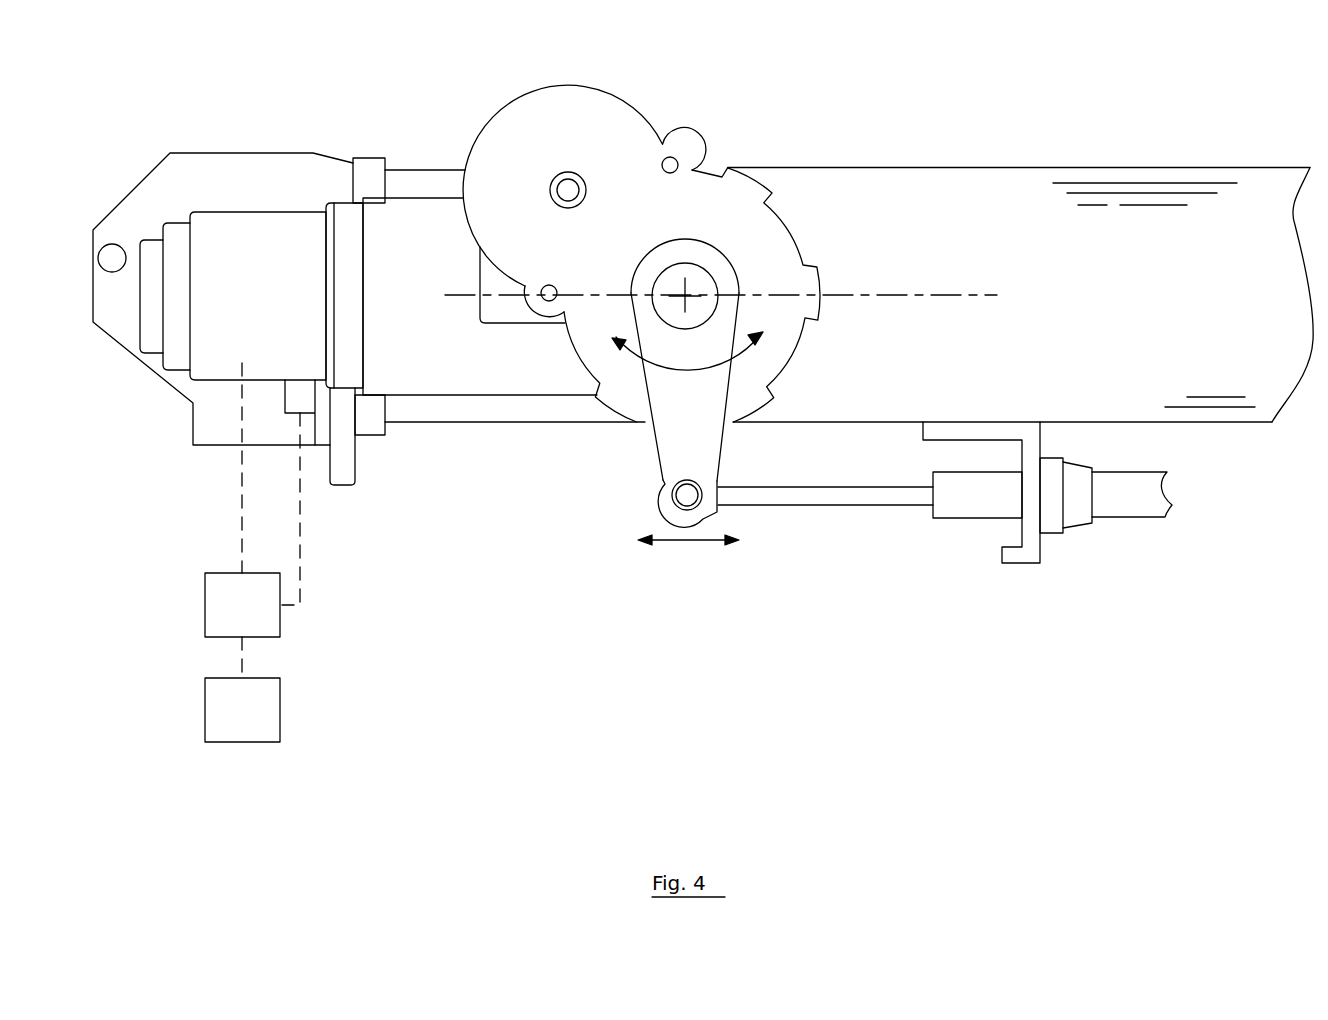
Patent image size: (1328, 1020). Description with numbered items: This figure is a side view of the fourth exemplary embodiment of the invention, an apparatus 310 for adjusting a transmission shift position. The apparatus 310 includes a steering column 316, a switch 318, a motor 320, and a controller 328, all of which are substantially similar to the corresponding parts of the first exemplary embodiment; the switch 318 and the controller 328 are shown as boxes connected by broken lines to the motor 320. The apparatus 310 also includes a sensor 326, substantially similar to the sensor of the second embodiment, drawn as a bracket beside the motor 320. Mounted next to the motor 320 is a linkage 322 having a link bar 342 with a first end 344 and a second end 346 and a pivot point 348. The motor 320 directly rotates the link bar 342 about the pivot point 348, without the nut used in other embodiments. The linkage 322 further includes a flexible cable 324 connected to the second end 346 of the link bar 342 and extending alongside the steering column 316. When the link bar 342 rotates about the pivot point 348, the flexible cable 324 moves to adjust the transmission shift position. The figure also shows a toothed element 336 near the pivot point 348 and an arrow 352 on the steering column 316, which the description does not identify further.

The apparatus 310 is at (891, 676).
The steering column 316 is at (1070, 132).
The switch 318 is at (217, 710).
The motor 320 is at (270, 306).
The linkage 322 is at (526, 553).
The flexible cable 324 is at (810, 500).
The sensor 326 is at (307, 402).
The controller 328 is at (217, 608).
The sector gear 336 is at (698, 278).
The link bar 342 is at (662, 352).
The first end 344 is at (683, 250).
The second end 346 is at (670, 457).
The pivot point 348 is at (648, 256).
The direction of movement 352 is at (896, 348).